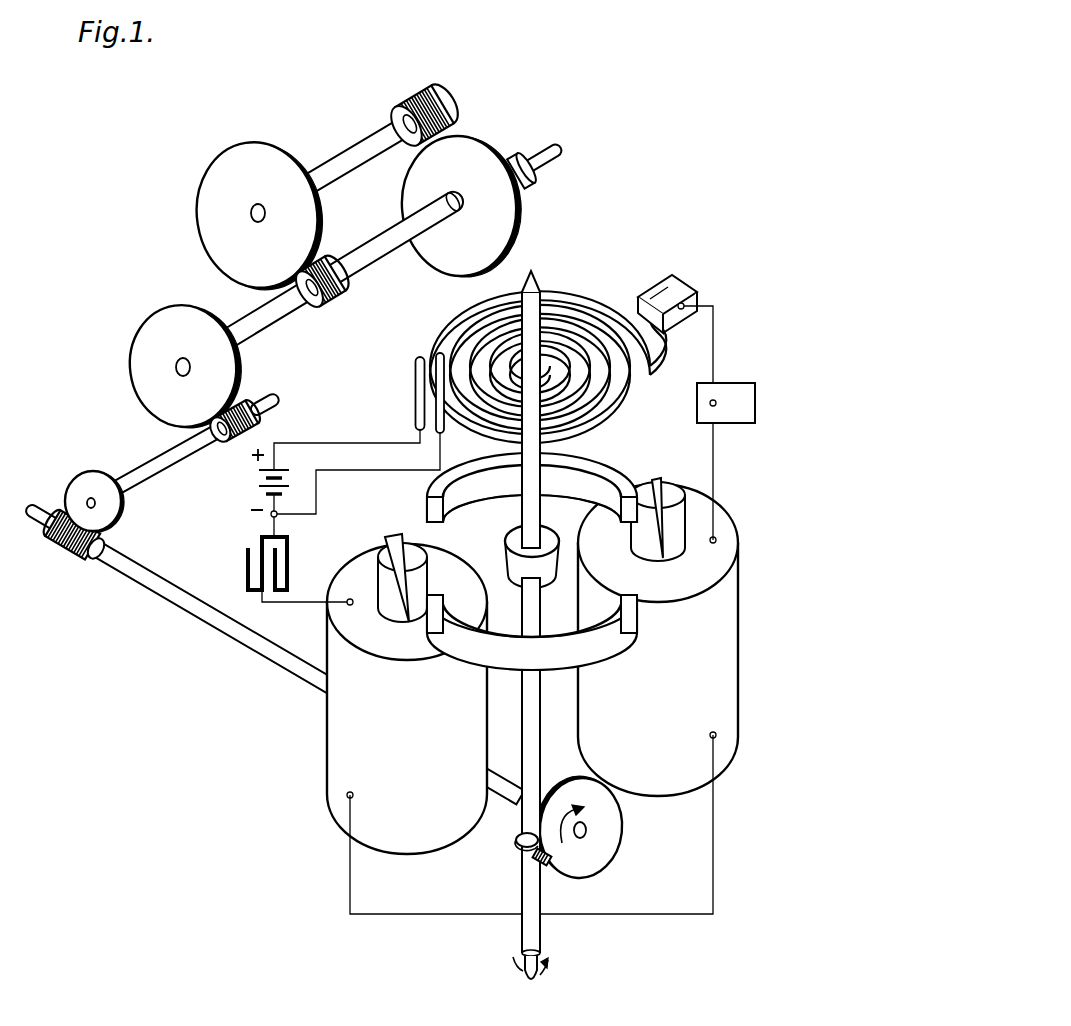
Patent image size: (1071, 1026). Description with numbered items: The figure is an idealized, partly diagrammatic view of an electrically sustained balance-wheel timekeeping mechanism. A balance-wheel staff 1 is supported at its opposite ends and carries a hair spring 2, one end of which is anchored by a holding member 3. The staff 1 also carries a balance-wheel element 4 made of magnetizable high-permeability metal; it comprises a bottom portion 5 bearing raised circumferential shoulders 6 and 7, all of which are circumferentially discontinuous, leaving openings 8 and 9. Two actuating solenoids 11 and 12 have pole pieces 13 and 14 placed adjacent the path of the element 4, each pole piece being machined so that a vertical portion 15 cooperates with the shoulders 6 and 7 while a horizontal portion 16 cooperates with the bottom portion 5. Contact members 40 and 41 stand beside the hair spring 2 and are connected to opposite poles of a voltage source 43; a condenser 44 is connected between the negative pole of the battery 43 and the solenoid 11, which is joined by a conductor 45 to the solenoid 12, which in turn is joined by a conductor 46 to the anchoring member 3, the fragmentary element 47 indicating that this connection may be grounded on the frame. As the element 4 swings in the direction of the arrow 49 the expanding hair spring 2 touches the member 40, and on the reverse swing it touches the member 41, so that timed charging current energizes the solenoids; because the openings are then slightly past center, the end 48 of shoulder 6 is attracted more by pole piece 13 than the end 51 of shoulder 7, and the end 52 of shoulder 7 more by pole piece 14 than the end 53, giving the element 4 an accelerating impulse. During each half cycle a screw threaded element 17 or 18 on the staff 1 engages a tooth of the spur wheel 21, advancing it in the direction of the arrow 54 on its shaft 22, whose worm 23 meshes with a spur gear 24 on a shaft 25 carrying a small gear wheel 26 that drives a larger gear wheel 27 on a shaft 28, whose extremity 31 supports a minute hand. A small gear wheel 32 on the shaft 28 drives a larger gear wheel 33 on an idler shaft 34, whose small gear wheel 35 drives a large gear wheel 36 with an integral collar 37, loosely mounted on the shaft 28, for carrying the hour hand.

The balance-wheel staff 1 is at (540, 288).
The hair spring 2 is at (588, 312).
The holding member 3 is at (690, 293).
The balance-wheel element 4 is at (600, 475).
The bottom portion 5 is at (463, 536).
The raised circumferential shoulder 6 is at (472, 474).
The raised circumferential shoulder 7 is at (522, 640).
The opening 8 is at (473, 560).
The opening 9 is at (603, 602).
The actuating solenoid 11 is at (385, 695).
The actuating solenoid 12 is at (680, 640).
The pole piece 13 is at (378, 583).
The pole piece 14 is at (677, 533).
The vertical portion 15 is at (399, 548).
The horizontal portion 16 is at (426, 601).
The screw threaded element 17 is at (560, 870).
The screw threaded element 18 is at (517, 838).
The spur wheel 21 is at (623, 833).
The shaft 22 is at (241, 649).
The worm 23 is at (70, 557).
The spur gear 24 is at (113, 475).
The shaft 25 is at (185, 473).
The small gear wheel 26 is at (262, 427).
The larger gear wheel 27 is at (150, 318).
The shaft 28 is at (287, 324).
The further extremity of the shaft 31 is at (561, 159).
The small gear wheel 32 is at (338, 306).
The larger gear wheel 33 is at (250, 144).
The idler shaft 34 is at (346, 154).
The small gear wheel 35 is at (440, 94).
The large gear wheel 36 is at (493, 162).
The integral collar 37 is at (535, 193).
The contact member 40 is at (415, 383).
The contact member 41 is at (436, 359).
The voltage source 43 is at (259, 487).
The condenser 44 is at (247, 566).
The conductor 45 is at (455, 918).
The conductor 46 is at (714, 358).
The fragmentary element 47 is at (755, 405).
The end of shoulder 6 48 is at (427, 505).
The arrow 49 is at (522, 972).
The end of shoulder 7 51 is at (426, 629).
The end of shoulder 7 52 is at (634, 613).
The end of shoulder 6 53 is at (621, 509).
The arrow 54 is at (570, 812).